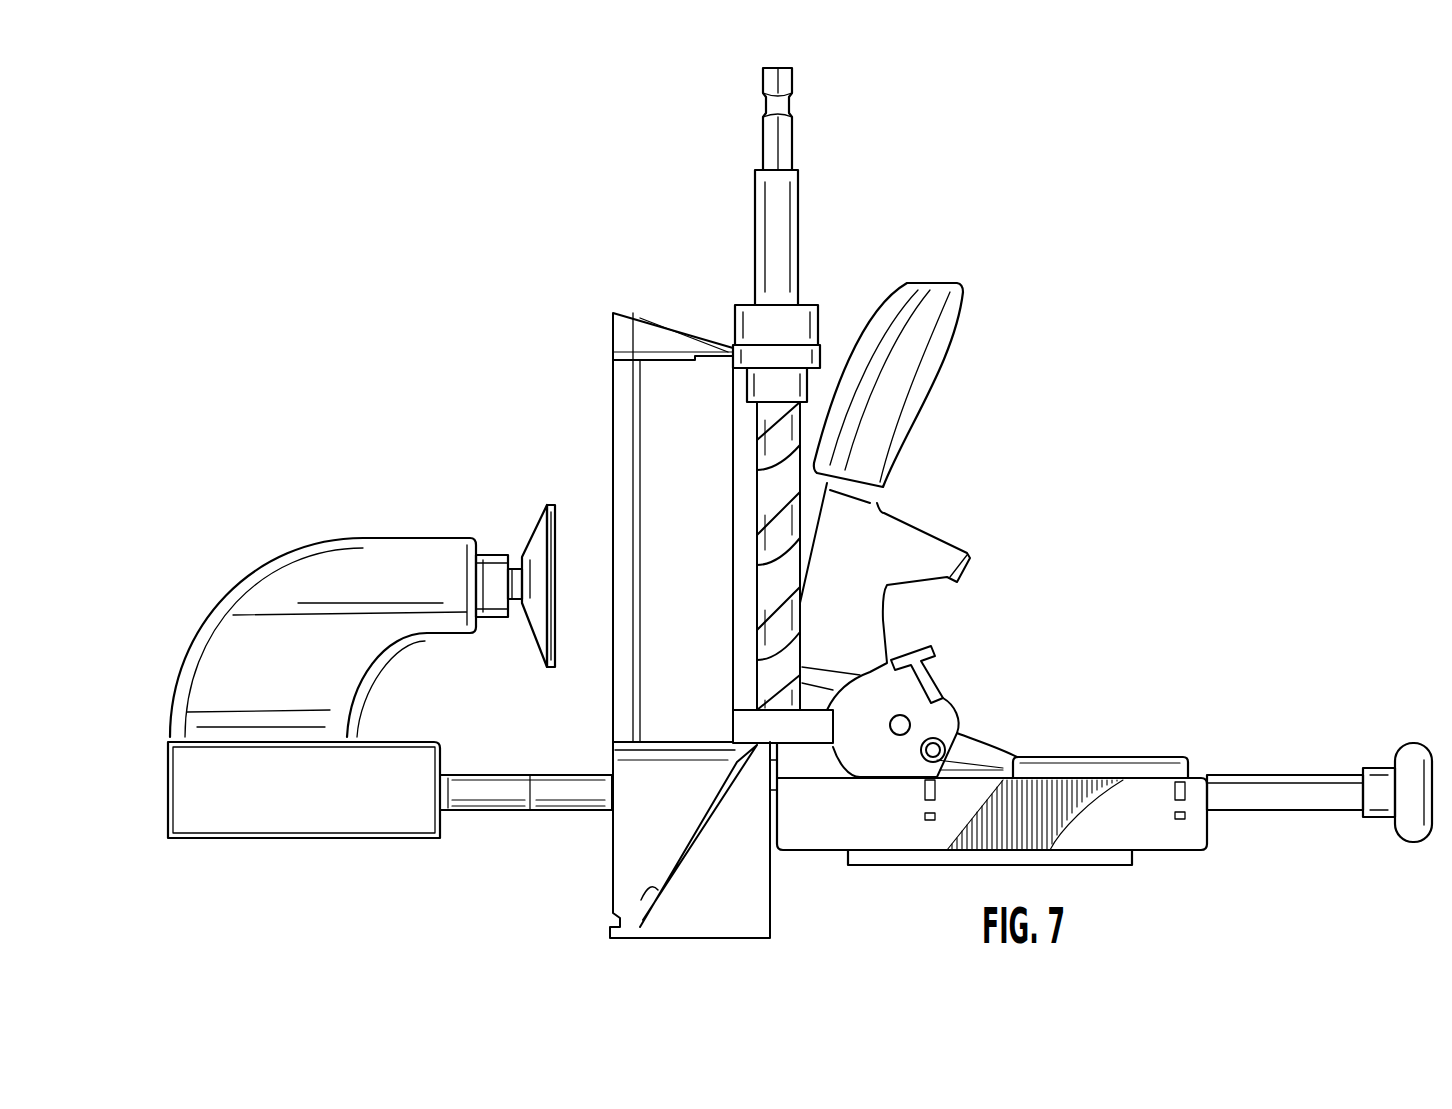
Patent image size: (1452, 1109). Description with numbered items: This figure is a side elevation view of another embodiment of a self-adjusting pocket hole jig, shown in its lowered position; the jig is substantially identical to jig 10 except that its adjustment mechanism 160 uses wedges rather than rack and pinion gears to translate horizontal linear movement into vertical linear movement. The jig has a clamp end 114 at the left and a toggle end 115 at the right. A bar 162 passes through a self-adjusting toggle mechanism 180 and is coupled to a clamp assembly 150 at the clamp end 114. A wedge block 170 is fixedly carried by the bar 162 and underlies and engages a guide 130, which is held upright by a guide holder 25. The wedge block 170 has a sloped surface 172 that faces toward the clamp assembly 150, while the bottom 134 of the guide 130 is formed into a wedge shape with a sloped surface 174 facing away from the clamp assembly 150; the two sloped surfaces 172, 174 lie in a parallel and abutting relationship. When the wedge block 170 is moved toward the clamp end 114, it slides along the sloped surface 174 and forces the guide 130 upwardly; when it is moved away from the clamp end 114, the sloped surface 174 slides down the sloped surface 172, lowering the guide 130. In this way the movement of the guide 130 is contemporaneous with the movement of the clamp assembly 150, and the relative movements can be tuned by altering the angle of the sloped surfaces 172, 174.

The self-adjusting pocket hole jig 10 is at (518, 385).
The guide holder 25 is at (800, 513).
The clamp end 114 is at (164, 835).
The toggle end 115 is at (1207, 835).
The guide 130 is at (606, 340).
The bottom of guide 134 is at (700, 800).
The clamp assembly 150 is at (325, 562).
The adjustment mechanism 160 is at (576, 866).
The bar 162 is at (488, 785).
The wedge block 170 is at (737, 920).
The sloped surface 172 is at (648, 890).
The sloped surface 174 is at (690, 833).
The self-adjusting toggle mechanism 180 is at (962, 514).